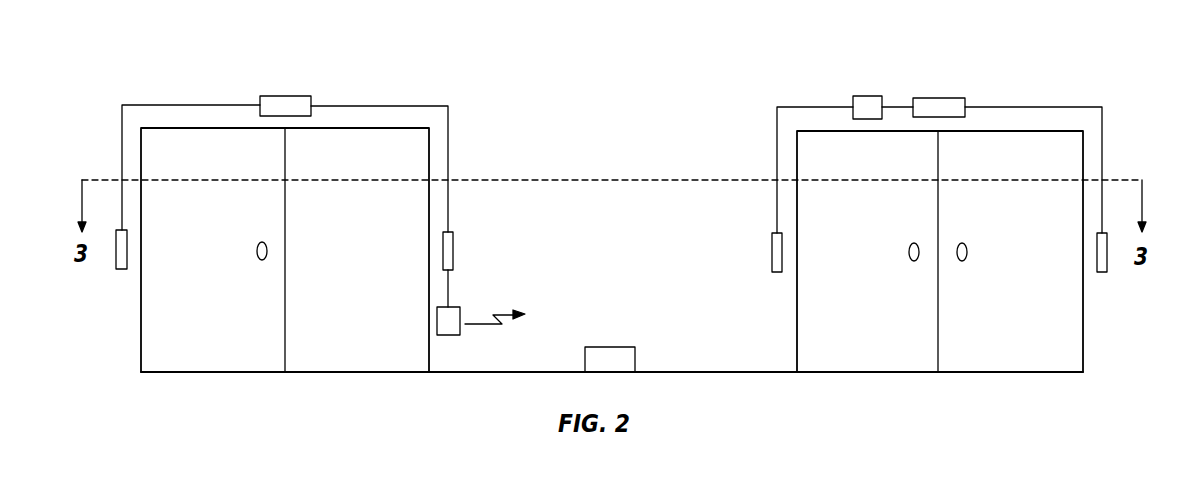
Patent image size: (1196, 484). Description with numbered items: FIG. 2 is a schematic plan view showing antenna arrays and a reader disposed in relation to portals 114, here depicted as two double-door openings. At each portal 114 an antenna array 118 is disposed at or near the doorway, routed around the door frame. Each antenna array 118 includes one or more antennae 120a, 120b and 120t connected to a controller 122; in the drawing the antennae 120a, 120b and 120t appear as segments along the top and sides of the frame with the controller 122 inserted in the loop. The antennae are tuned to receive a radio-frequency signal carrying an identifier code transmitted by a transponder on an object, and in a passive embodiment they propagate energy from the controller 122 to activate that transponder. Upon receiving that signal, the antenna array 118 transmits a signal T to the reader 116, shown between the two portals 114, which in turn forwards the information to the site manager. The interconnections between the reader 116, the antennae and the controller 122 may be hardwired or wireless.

The portal 114 is at (278, 402).
The reader 116 is at (610, 347).
The antenna array 118 is at (405, 73).
The antenna 120a is at (453, 255).
The antenna 120b is at (283, 96).
The antenna 120t is at (122, 269).
The controller 122 is at (447, 335).
The signal T is at (497, 316).